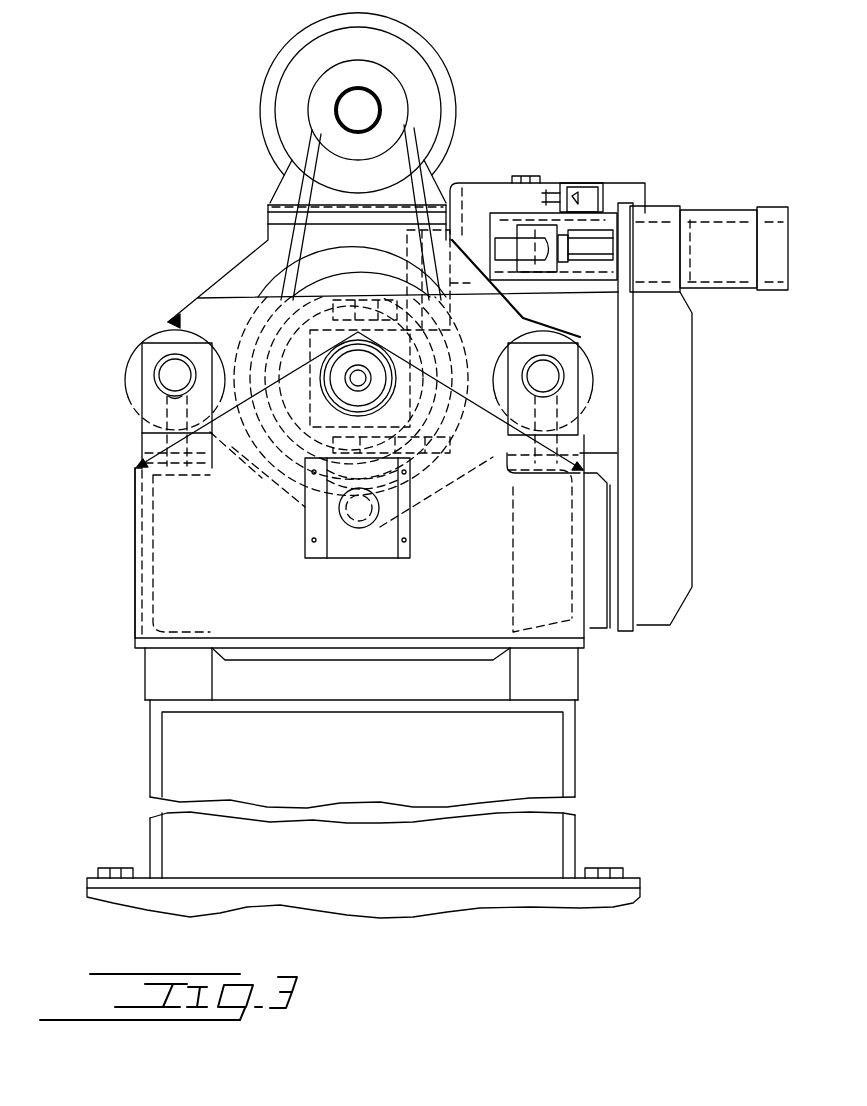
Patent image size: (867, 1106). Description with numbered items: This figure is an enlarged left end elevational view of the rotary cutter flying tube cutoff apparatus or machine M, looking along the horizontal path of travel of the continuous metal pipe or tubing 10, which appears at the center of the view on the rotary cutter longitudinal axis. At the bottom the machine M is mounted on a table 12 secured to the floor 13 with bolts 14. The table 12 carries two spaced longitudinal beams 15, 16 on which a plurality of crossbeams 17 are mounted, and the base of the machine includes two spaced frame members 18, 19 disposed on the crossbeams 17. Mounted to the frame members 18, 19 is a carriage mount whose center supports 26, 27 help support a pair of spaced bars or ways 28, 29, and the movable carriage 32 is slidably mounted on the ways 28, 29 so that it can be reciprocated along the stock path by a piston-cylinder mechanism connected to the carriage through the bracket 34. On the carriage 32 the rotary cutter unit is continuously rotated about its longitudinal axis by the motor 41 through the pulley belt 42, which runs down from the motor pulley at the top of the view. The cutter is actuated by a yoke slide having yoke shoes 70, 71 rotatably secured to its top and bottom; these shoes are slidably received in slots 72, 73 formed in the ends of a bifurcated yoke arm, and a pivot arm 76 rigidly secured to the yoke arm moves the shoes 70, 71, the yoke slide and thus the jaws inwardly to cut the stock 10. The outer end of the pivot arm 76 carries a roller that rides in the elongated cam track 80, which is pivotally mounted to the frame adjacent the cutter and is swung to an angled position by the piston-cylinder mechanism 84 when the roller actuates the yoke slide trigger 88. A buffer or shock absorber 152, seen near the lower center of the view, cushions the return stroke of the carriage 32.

The motor 41 is at (418, 48).
The pulley belt 42 is at (410, 140).
The pivot arm 76 is at (497, 185).
The cam track 80 is at (512, 222).
The yoke slide trigger 88 is at (555, 185).
The piston-cylinder mechanism 84 is at (727, 225).
The rotary cutter flying tube cutoff apparatus M is at (238, 260).
The movable carriage 32 is at (142, 338).
The way 29 is at (118, 377).
The center support 27 is at (140, 409).
The way 28 is at (553, 376).
The center support 26 is at (560, 408).
The metal pipe or tubing 10 is at (355, 378).
The yoke shoe 70 is at (328, 325).
The slot 72 is at (378, 306).
The yoke shoe 71 is at (268, 443).
The bracket 34 is at (252, 480).
The slot 73 is at (420, 466).
The buffer or shock absorber 152 is at (395, 560).
The frame member 19 is at (590, 505).
The frame member 18 is at (135, 536).
The longitudinal beam 15 is at (148, 672).
The longitudinal beam 16 is at (570, 672).
The crossbeam 17 is at (355, 655).
The table 12 is at (572, 752).
The floor 13 is at (620, 903).
The bolt 14 is at (112, 866).